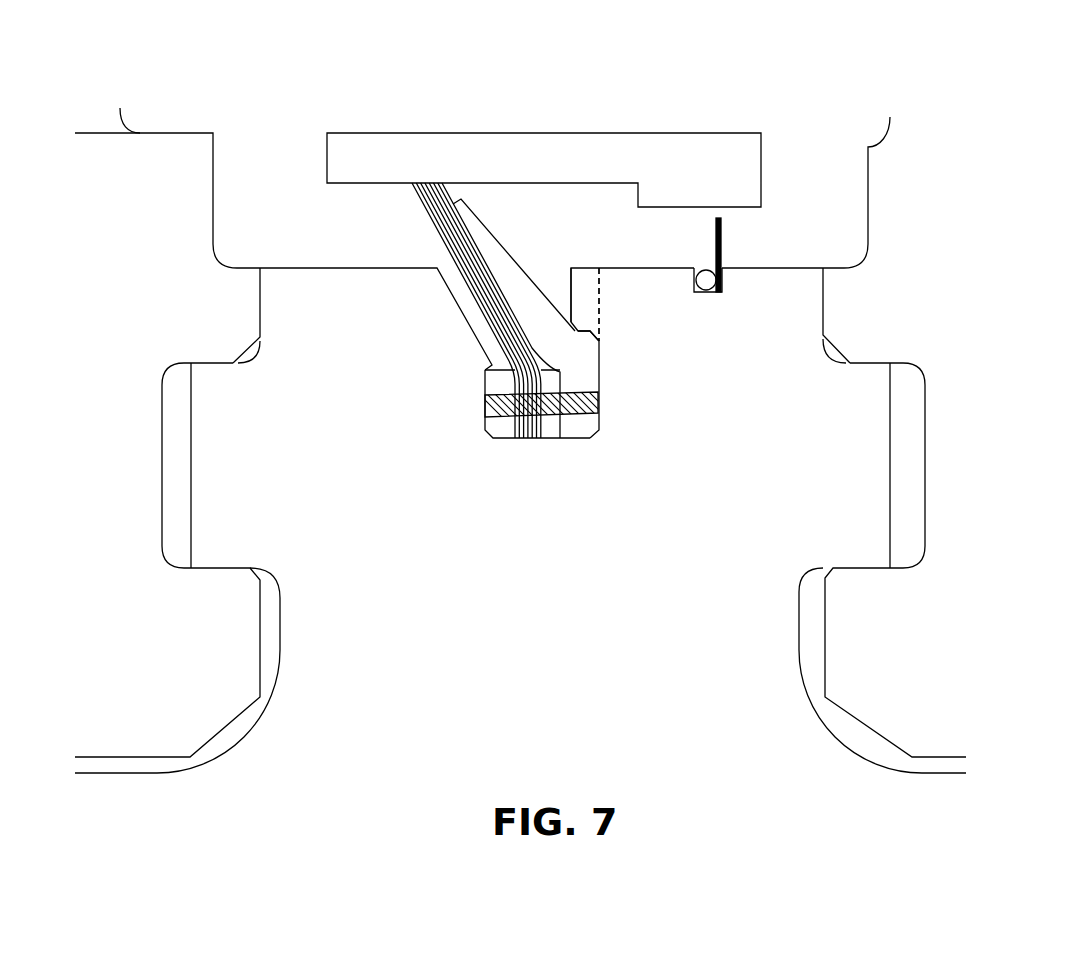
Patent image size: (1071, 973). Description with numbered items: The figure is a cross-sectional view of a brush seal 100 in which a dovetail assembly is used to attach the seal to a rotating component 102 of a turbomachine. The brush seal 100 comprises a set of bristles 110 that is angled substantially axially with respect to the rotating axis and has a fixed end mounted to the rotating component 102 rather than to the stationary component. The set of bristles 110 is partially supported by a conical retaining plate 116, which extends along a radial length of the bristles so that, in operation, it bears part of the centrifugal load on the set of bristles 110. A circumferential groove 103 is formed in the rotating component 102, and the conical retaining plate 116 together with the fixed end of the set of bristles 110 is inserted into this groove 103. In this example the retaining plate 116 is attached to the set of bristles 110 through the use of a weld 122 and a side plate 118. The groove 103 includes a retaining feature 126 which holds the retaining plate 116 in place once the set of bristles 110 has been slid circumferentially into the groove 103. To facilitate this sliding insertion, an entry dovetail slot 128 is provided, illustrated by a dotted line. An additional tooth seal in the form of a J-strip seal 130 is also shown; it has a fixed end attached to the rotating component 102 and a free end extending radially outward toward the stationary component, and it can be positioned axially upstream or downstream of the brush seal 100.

The brush seal 100 is at (240, 104).
The rotating component 102 is at (243, 403).
The circumferential groove 103 is at (547, 287).
The set of bristles 110 is at (450, 275).
The conical retaining plate 116 is at (543, 320).
The side plate 118 is at (500, 383).
The weld 122 is at (573, 408).
The retaining feature 126 is at (583, 295).
The entry dovetail slot 128 is at (597, 290).
The J-strip seal 130 is at (722, 254).